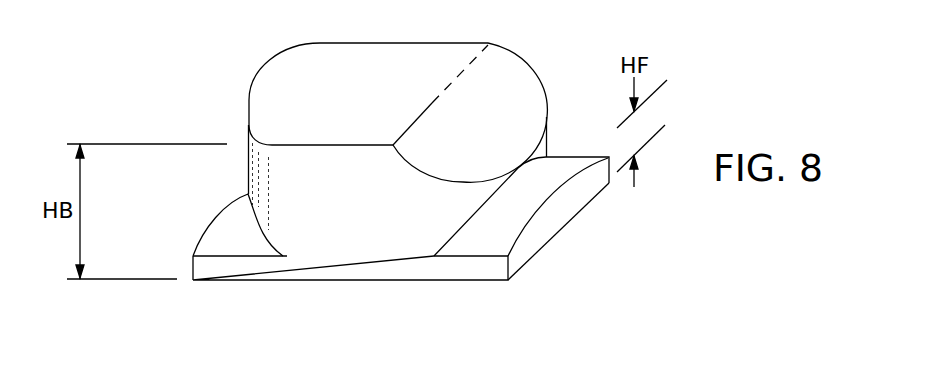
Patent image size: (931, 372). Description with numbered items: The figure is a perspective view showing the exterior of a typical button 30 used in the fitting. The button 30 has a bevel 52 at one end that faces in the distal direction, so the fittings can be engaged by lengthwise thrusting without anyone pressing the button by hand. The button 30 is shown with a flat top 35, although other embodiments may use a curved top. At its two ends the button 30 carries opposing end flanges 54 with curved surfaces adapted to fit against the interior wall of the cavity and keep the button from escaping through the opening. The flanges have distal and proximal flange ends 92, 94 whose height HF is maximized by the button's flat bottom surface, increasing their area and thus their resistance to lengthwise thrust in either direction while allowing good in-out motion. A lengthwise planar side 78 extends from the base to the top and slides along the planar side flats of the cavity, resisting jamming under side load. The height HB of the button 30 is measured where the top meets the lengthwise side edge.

The button 30 is at (435, 53).
The flat top 35 is at (320, 72).
The bevel 52 is at (523, 76).
The end flanges 54 is at (217, 235).
The lengthwise planar side 78 is at (357, 223).
The flange end 92 is at (563, 208).
The flange end 94 is at (191, 267).